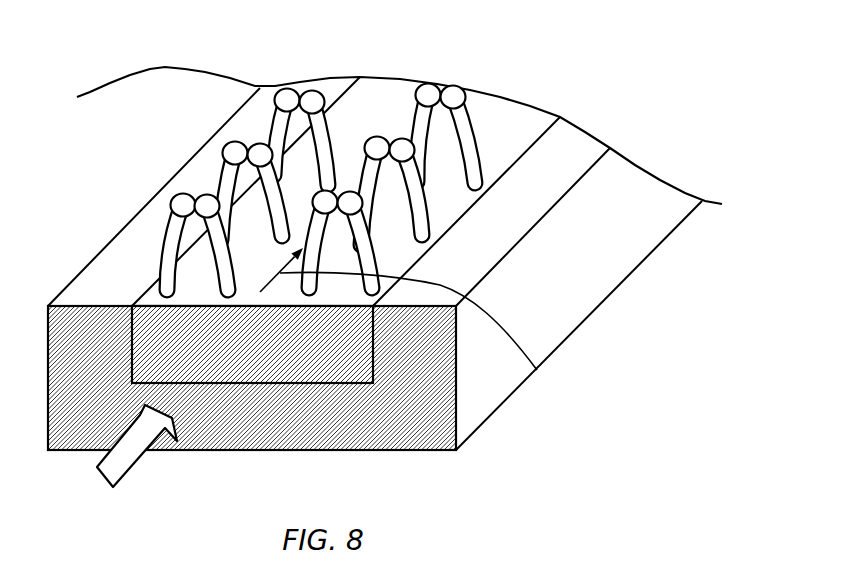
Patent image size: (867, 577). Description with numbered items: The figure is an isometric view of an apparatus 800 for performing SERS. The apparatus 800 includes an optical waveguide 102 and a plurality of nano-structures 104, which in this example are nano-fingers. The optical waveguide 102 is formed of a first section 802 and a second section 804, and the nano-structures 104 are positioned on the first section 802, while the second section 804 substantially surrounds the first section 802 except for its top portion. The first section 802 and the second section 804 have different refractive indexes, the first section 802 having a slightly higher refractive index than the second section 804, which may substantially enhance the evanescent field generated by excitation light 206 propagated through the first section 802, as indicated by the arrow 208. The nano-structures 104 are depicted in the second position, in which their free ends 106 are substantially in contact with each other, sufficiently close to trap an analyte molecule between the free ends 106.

The apparatus 800 is at (112, 63).
The optical waveguide 102 is at (177, 123).
The nano-structures 104 is at (143, 247).
The free ends 106 is at (172, 200).
The excitation light 206 is at (130, 467).
The arrow 208 is at (537, 370).
The first section 802 is at (270, 383).
The second section 804 is at (437, 452).